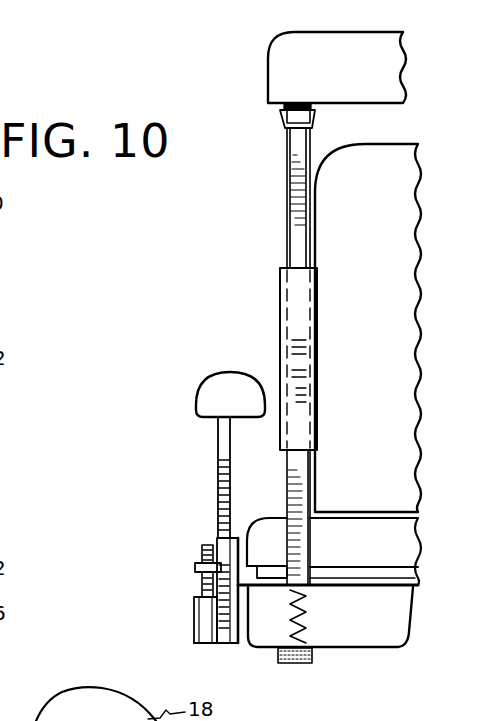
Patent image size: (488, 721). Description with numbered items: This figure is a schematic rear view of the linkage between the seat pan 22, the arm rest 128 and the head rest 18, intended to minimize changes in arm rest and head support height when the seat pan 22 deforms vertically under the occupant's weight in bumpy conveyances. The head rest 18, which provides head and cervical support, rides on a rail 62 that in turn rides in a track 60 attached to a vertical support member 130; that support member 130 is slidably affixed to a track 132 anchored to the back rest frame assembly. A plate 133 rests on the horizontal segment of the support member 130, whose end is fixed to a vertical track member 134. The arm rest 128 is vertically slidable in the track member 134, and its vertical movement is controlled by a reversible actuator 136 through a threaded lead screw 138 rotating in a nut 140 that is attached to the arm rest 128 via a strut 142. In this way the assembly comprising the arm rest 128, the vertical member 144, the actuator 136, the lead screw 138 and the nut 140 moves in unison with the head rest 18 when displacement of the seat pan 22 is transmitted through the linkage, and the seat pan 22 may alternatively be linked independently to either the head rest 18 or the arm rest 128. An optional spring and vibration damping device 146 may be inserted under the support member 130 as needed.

The head rest 18 is at (288, 47).
The seat pan 22 is at (385, 625).
The track 60 is at (281, 121).
The rail 62 is at (284, 107).
The arm rest 128 is at (220, 372).
The vertical support member 130 is at (292, 210).
The track 132 is at (280, 288).
The plate 133 is at (268, 573).
The vertical track member 134 is at (227, 556).
The reversible actuator 136 is at (200, 618).
The threaded lead screw 138 is at (202, 549).
The nut 140 is at (195, 567).
The strut 142 is at (223, 645).
The vertical member 144 is at (219, 439).
The spring and vibration damping device 146 is at (302, 623).